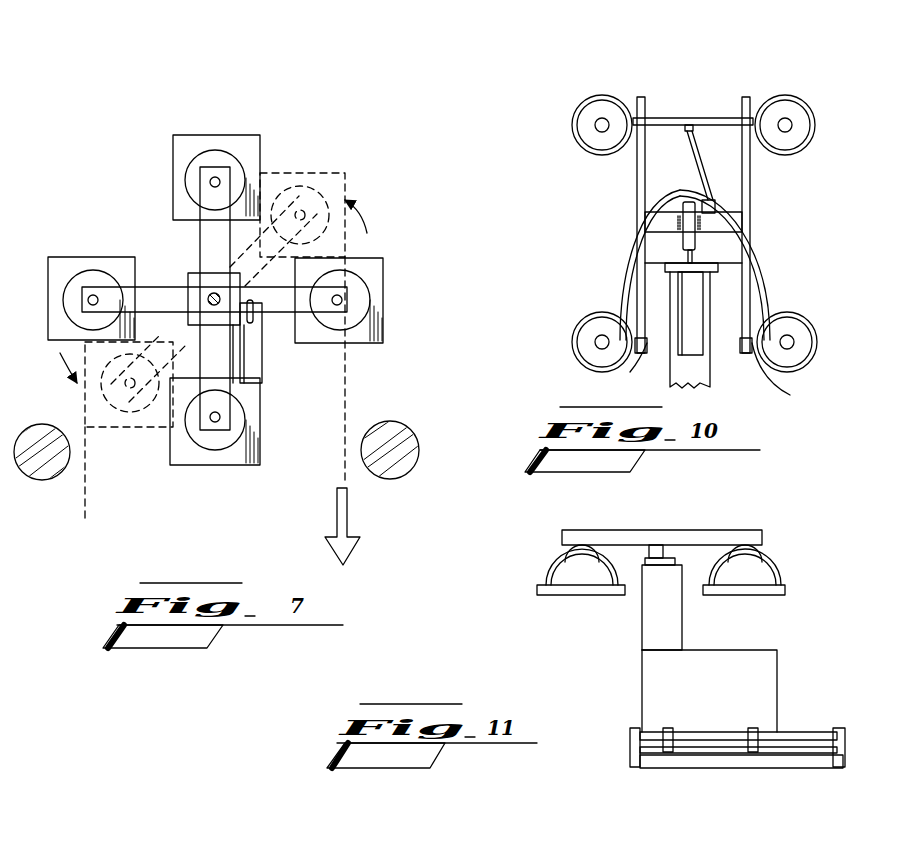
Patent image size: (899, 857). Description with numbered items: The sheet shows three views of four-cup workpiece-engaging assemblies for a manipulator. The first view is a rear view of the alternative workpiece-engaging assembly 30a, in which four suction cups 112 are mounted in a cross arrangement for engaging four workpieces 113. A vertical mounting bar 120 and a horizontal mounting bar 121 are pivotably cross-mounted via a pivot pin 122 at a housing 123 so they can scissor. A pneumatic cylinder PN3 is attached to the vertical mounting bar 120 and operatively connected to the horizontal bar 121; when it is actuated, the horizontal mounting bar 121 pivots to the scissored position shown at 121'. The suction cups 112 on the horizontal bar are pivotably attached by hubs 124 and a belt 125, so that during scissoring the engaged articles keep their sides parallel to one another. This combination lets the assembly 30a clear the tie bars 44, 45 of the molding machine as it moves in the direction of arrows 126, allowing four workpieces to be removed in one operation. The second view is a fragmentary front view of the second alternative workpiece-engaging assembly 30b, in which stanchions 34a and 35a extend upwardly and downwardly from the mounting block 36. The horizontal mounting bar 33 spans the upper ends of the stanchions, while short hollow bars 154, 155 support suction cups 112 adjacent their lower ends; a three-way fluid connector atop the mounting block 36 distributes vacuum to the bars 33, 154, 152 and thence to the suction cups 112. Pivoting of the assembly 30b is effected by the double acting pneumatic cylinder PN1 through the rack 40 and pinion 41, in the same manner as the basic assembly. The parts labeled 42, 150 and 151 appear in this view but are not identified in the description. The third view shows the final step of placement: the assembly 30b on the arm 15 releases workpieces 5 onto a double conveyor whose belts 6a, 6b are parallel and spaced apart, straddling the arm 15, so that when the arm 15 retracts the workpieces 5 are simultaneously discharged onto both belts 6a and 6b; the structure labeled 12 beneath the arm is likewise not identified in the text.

In FIG. 7, the suction cups 112 is at (215, 152).
In FIG. 10, the suction cups 112 is at (597, 93).
In FIG. 7, the workpieces 113 is at (255, 140).
In FIG. 7, the vertical mounting bar 120 is at (207, 242).
In FIG. 7, the horizontal mounting bar 121 is at (275, 354).
In FIG. 7, the scissored position of horizontal mounting bar 121' is at (226, 333).
In FIG. 7, the pivot pin 122 is at (190, 275).
In FIG. 7, the housing 123 is at (211, 296).
In FIG. 7, the hubs 124 is at (93, 295).
In FIG. 7, the belt 125 is at (325, 338).
In FIG. 7, the arrows 126 is at (338, 517).
In FIG. 7, the pneumatic cylinder PN3 is at (262, 385).
In FIG. 7, the tie bar 44 is at (395, 472).
In FIG. 7, the tie bar 45 is at (48, 480).
In FIG. 7, the alternative workpiece-engaging assembly 30a is at (344, 122).
In FIG. 11, the second alternative workpiece-engaging assembly 30b is at (660, 524).
In FIG. 10, the horizontal mounting bar 33 is at (663, 117).
In FIG. 10, the stanchion 35a is at (638, 172).
In FIG. 10, the stanchion 34a is at (750, 193).
In FIG. 10, the rod 42 is at (700, 167).
In FIG. 10, the connector block 150 is at (716, 210).
In FIG. 10, the rack 40 is at (695, 238).
In FIG. 10, the pinion 41 is at (683, 240).
In FIG. 10, the mounting block 36 is at (728, 253).
In FIG. 10, the left arm 151 is at (620, 270).
In FIG. 10, the bar 152 is at (767, 280).
In FIG. 10, the short hollow bar 154 is at (642, 365).
In FIG. 10, the short hollow bar 155 is at (793, 375).
In FIG. 10, the arm 15 is at (722, 370).
In FIG. 11, the arm 15 is at (636, 623).
In FIG. 10, the double acting pneumatic cylinder PN1 is at (688, 338).
In FIG. 11, the workpieces 5 is at (555, 570).
In FIG. 11, the belt 6a is at (567, 598).
In FIG. 11, the belt 6b is at (767, 596).
In FIG. 11, the base 12 is at (780, 690).